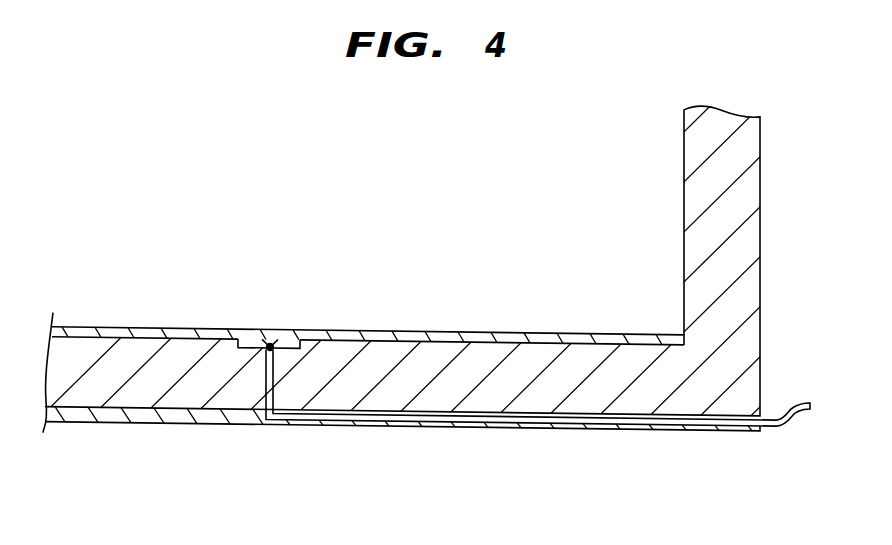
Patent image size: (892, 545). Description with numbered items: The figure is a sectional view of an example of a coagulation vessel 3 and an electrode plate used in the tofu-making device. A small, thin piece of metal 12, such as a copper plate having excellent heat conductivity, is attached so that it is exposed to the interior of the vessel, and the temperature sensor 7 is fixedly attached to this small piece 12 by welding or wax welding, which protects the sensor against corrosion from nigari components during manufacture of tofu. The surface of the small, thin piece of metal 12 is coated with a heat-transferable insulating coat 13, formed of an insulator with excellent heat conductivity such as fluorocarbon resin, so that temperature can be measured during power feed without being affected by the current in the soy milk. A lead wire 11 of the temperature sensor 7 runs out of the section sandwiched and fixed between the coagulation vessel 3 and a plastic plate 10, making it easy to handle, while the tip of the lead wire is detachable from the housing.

The coagulation vessel 3 is at (738, 245).
The temperature sensor 7 is at (264, 351).
The plastic plate 10 is at (413, 428).
The lead wire 11 is at (779, 427).
The small, thin piece of metal 12 is at (267, 331).
The heat-transferable insulating coat 13 is at (405, 333).